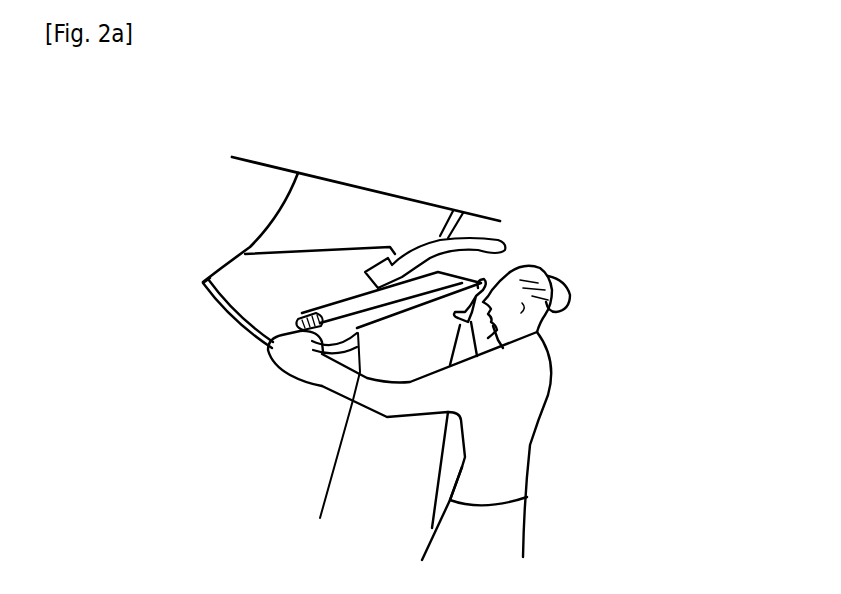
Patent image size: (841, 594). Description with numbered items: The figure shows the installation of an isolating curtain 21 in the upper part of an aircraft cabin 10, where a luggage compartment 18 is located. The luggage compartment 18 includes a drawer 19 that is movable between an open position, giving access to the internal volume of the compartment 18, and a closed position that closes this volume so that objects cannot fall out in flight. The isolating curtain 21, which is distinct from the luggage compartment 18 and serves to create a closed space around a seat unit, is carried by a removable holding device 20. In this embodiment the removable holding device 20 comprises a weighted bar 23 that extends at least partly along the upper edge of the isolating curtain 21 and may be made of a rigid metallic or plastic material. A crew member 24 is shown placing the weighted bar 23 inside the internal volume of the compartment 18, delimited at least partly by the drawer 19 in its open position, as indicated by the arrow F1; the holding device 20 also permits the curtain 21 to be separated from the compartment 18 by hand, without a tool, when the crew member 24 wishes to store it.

The aircraft cabin 10 is at (190, 143).
The luggage compartment 18 is at (388, 213).
The drawer 19 is at (271, 298).
The removable holding device 20 is at (341, 281).
The isolating curtain 21 is at (353, 467).
The weighted bar 23 is at (296, 318).
The crew member 24 is at (530, 395).
The arrow F1 is at (482, 241).